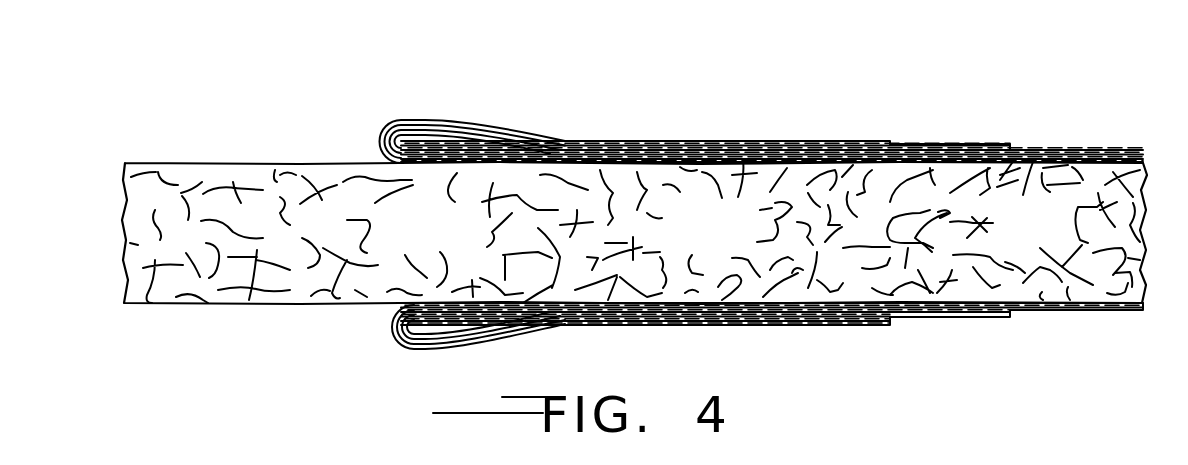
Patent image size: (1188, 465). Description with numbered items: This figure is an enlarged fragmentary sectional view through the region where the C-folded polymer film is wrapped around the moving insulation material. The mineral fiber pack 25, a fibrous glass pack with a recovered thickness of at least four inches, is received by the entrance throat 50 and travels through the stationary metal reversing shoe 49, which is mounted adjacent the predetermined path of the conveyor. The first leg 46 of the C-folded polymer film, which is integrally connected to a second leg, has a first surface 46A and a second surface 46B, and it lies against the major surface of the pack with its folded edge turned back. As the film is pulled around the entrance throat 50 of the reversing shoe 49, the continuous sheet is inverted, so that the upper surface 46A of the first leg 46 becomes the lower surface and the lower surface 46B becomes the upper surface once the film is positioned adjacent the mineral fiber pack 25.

The mineral fiber pack 25 is at (240, 312).
The first leg 46 is at (773, 173).
The first surface 46A is at (425, 120).
The second surface 46B is at (695, 138).
The metal reversing shoe 49 is at (530, 128).
The entrance throat 50 is at (378, 144).